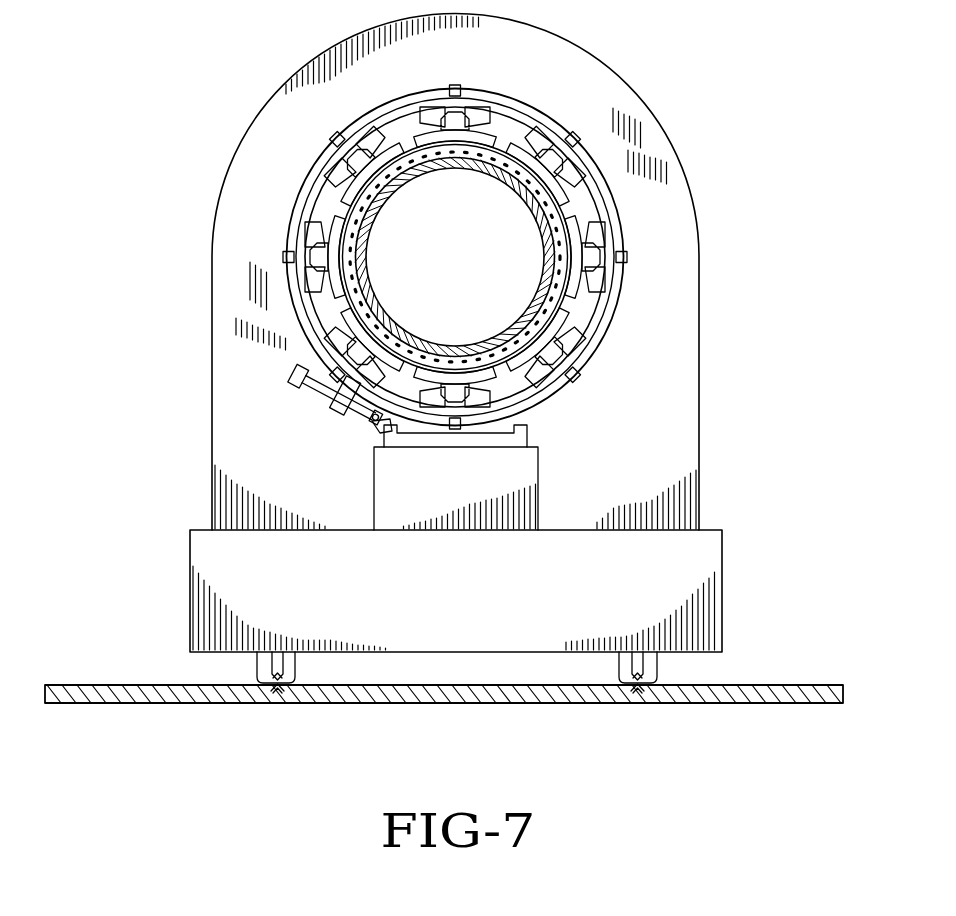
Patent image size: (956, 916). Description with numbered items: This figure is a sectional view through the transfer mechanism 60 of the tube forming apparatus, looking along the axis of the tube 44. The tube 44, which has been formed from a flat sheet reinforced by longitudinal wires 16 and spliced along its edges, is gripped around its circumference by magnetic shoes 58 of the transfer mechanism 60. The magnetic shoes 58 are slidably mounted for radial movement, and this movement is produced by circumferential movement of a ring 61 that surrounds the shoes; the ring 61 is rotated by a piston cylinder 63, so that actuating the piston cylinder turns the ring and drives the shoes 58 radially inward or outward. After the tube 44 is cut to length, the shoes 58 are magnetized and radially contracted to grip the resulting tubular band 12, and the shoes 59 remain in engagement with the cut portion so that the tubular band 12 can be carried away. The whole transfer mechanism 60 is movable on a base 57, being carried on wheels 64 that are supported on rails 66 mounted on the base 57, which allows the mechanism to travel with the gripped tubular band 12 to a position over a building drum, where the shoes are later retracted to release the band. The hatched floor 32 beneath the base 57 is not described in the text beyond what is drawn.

The tubular band 12 is at (533, 327).
The wires 16 is at (537, 192).
The floor / mounting surface 32 is at (802, 692).
The tube 44 is at (593, 312).
The base 57 is at (210, 567).
The magnetic shoes 58 is at (358, 162).
The shoes 59 is at (587, 255).
The transfer mechanism 60 is at (478, 485).
The ring 61 is at (297, 207).
The piston cylinder 63 is at (320, 387).
The wheels 64 is at (292, 663).
The rails 66 is at (281, 690).